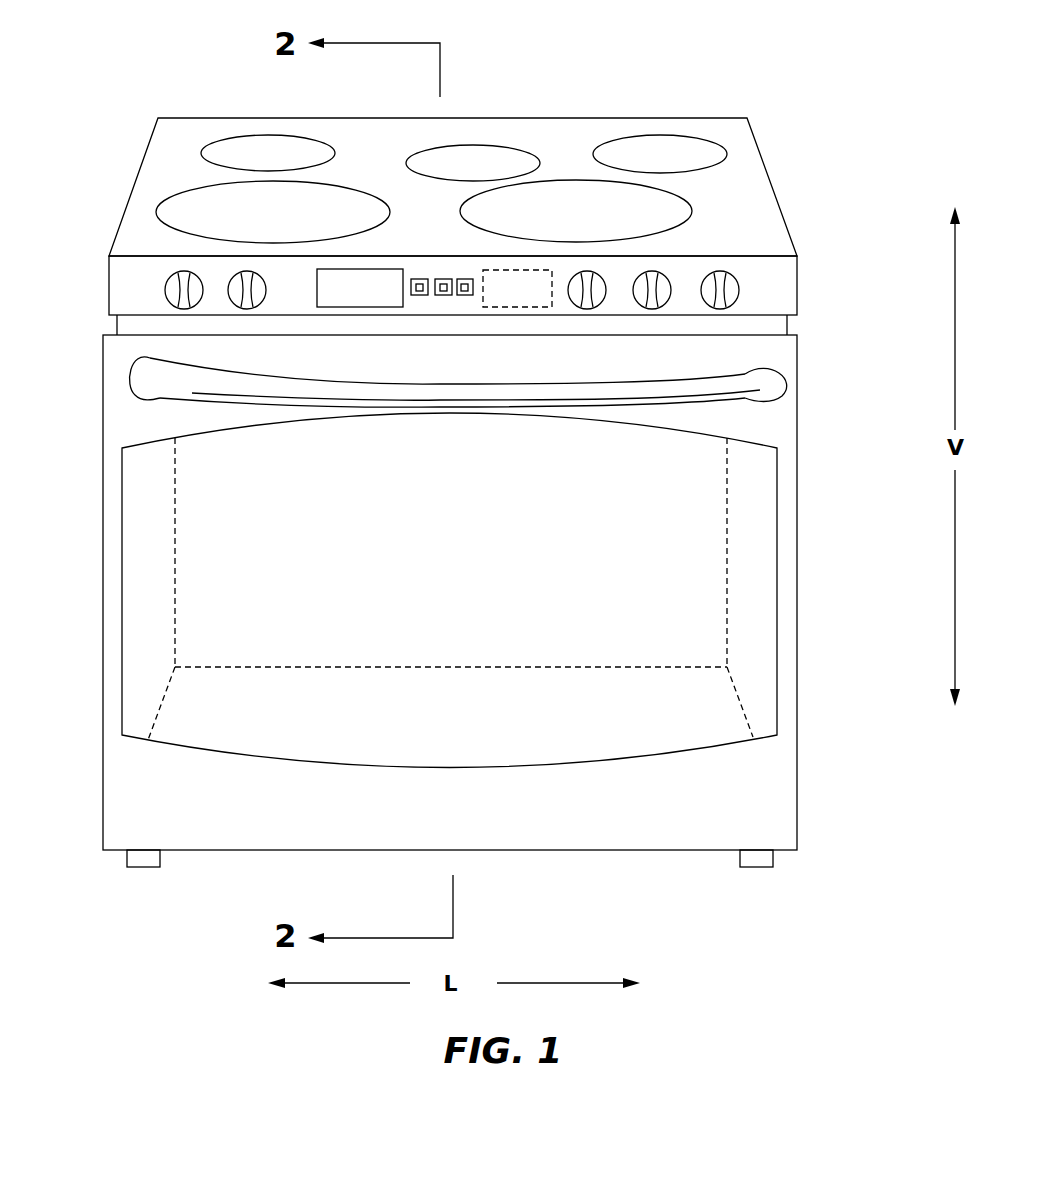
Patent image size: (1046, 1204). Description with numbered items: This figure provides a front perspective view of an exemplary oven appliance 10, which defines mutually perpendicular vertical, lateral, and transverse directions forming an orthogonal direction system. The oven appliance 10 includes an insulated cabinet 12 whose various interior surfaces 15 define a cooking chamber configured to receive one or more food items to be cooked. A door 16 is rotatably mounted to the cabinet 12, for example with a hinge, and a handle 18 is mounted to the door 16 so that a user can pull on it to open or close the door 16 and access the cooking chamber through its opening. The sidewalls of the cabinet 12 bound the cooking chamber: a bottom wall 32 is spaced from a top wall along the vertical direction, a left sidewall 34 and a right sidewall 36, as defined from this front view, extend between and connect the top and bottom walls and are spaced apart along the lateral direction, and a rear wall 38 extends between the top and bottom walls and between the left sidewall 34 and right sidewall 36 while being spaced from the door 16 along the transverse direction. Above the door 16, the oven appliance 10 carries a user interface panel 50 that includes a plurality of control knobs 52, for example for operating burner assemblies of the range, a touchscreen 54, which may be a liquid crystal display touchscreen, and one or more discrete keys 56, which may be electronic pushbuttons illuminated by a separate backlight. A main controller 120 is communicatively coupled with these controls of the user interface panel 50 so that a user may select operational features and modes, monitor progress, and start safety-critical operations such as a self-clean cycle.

The oven appliance 10 is at (790, 91).
The insulated cabinet 12 is at (132, 325).
The interior surfaces 15 is at (200, 715).
The door 16 is at (780, 350).
The handle 18 is at (185, 389).
The bottom wall 32 is at (567, 750).
The left sidewall 34 is at (150, 565).
The right sidewall 36 is at (745, 575).
The rear wall 38 is at (655, 494).
The user interface panel 50 is at (298, 278).
The control knobs 52 is at (727, 287).
The touchscreen 54 is at (383, 268).
The discrete keys 56 is at (420, 295).
The main controller 120 is at (530, 268).